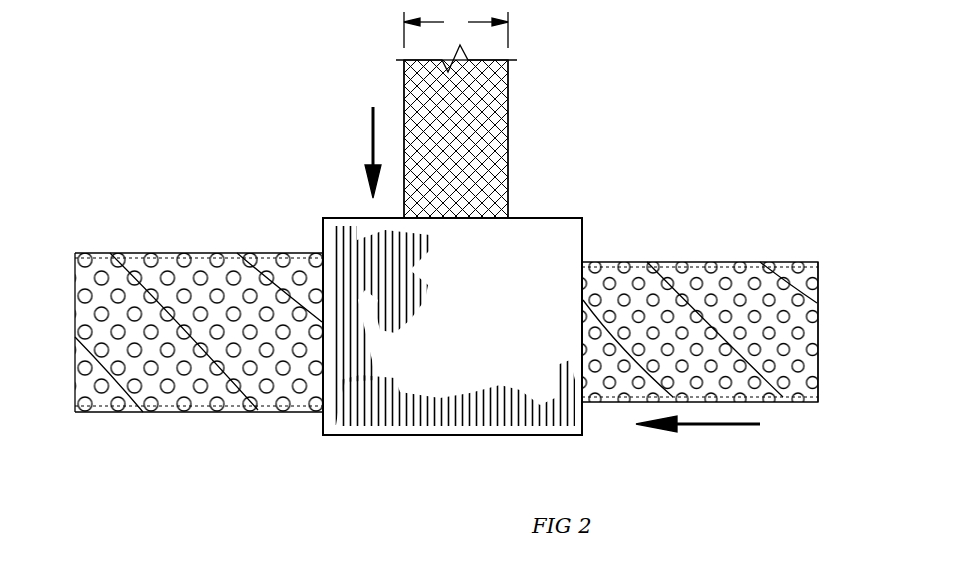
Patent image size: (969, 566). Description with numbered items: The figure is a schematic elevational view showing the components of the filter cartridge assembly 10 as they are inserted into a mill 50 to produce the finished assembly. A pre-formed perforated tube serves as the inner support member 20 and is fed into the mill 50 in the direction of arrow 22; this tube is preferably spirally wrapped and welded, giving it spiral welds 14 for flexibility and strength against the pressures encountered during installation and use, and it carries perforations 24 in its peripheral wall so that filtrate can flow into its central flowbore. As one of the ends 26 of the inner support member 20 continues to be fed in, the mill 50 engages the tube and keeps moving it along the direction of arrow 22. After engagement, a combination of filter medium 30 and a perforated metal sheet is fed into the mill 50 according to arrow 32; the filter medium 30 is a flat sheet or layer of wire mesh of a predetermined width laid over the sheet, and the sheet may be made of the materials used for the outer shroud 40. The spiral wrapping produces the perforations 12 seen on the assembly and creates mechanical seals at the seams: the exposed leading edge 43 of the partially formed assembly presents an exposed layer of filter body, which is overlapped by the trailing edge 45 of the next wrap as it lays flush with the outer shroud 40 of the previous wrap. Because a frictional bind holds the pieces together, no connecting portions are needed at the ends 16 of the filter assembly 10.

The filter cartridge assembly 10 is at (112, 205).
The perforations 12 is at (285, 258).
The spiral welds 14 is at (180, 387).
The ends of filter assembly 16 is at (73, 265).
The inner support member 20 is at (708, 263).
The arrow 22 is at (712, 425).
The perforations 24 is at (655, 263).
The ends of inner support member 26 is at (818, 297).
The filter medium 30 is at (508, 105).
The arrow 32 is at (372, 146).
The outer shroud 40 is at (183, 280).
The leading edge 43 is at (508, 178).
The trailing edge 45 is at (404, 90).
The mill 50 is at (523, 293).